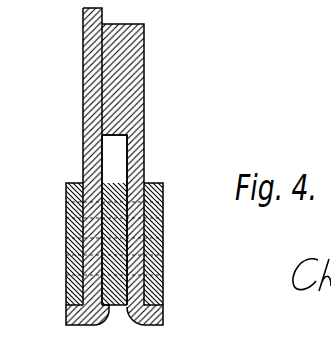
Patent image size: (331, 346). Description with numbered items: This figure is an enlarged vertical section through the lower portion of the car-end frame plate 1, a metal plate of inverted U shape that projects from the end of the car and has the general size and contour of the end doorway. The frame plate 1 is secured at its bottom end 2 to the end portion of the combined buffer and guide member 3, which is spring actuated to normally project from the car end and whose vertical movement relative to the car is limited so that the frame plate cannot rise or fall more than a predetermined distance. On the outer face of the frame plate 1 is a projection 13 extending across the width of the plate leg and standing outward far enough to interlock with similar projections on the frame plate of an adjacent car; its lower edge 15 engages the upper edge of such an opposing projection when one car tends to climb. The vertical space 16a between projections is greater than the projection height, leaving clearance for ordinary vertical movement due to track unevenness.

The frame plate 1 is at (113, 156).
The projection 13 is at (115, 90).
The lower edge 15 is at (104, 138).
The vertical space 16a is at (103, 152).
The combined buffer and guide member 3 is at (181, 230).
The bottom end 2 is at (185, 287).